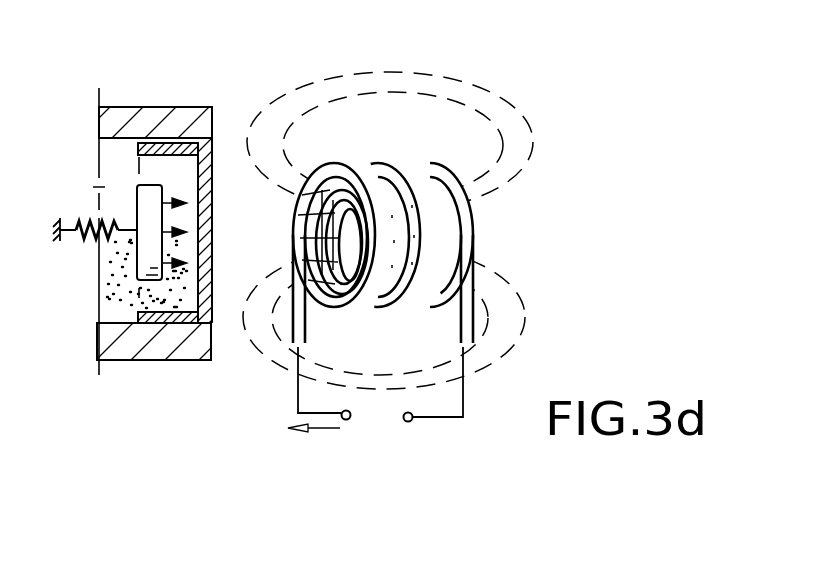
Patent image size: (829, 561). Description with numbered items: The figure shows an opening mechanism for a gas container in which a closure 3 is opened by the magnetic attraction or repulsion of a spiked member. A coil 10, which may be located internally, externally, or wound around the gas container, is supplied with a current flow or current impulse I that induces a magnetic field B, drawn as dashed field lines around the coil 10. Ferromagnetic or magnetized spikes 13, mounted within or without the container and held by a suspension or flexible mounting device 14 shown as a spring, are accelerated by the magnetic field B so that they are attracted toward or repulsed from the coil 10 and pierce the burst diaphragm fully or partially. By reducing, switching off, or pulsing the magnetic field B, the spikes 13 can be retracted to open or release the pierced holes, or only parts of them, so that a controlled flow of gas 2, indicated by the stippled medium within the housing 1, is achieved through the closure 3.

The housing 1 is at (157, 106).
The gas 2 is at (130, 283).
The closure 3 is at (214, 175).
The spikes 13 is at (137, 212).
The suspension or flexible mounting device 14 is at (85, 247).
The coil 10 is at (406, 165).
The magnetic field B is at (283, 95).
The current flow or current impulse I is at (283, 434).